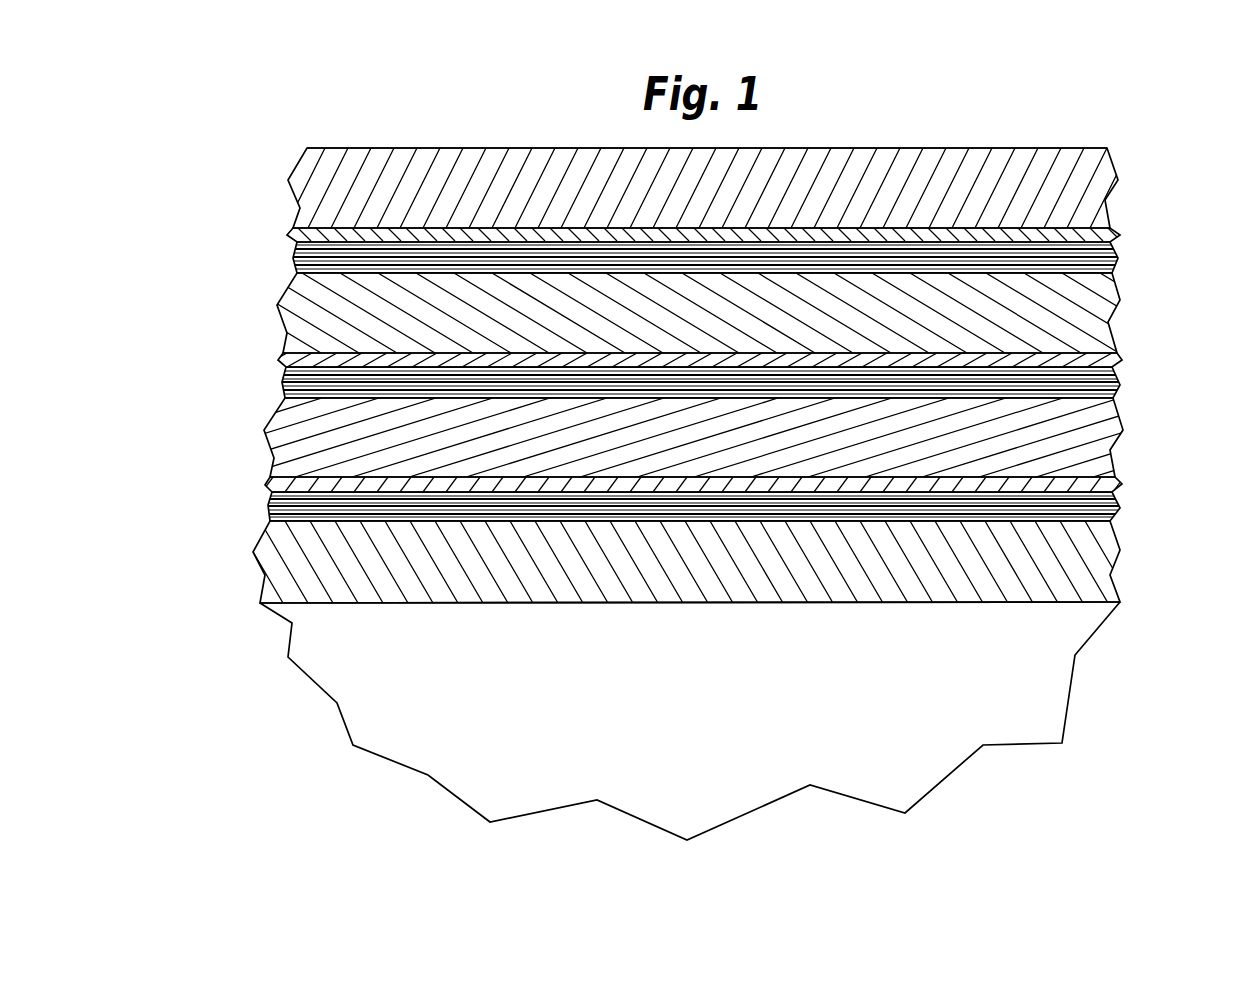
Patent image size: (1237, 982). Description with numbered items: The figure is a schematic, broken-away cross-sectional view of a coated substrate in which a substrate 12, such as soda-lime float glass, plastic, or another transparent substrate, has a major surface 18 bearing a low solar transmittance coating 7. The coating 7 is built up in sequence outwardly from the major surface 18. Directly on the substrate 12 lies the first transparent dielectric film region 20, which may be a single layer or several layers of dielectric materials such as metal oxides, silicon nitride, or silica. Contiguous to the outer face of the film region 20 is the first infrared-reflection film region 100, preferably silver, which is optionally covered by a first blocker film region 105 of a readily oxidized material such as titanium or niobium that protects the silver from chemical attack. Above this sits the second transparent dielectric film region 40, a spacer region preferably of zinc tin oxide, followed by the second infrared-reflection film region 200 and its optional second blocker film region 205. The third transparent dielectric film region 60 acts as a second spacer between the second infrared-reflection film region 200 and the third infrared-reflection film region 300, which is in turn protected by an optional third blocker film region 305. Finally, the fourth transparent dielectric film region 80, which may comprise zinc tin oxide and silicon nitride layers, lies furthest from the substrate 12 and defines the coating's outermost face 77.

The low solar transmittance coating 7 is at (623, 382).
The substrate 12 is at (743, 718).
The major surface 18 is at (1060, 600).
The first transparent dielectric film region 20 is at (697, 572).
The second transparent dielectric film region 40 is at (697, 447).
The third transparent dielectric film region 60 is at (697, 316).
The outermost face 77 is at (940, 148).
The fourth transparent dielectric film region 80 is at (697, 198).
The first infrared-reflection film region 100 is at (270, 478).
The first blocker film region 105 is at (1080, 477).
The second infrared-reflection film region 200 is at (284, 358).
The second blocker film region 205 is at (1083, 352).
The third infrared-reflection film region 300 is at (297, 262).
The third blocker film region 305 is at (1073, 227).